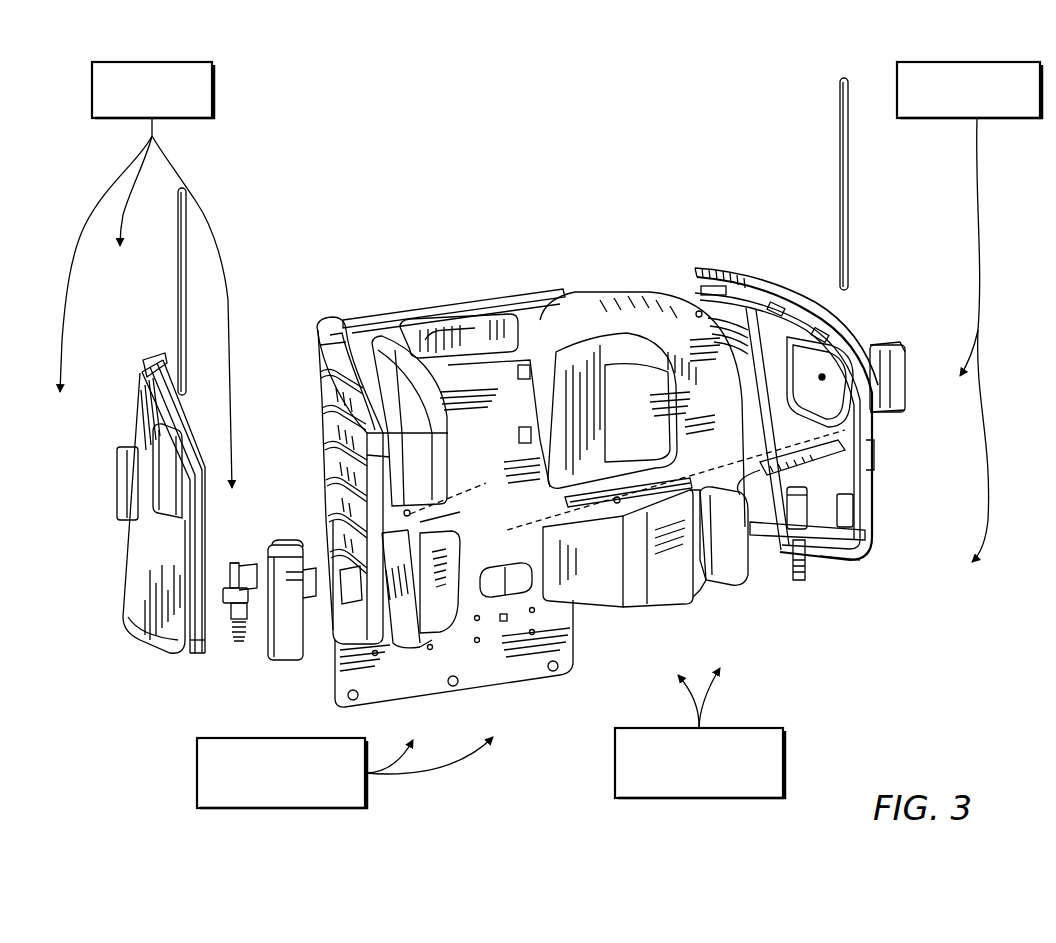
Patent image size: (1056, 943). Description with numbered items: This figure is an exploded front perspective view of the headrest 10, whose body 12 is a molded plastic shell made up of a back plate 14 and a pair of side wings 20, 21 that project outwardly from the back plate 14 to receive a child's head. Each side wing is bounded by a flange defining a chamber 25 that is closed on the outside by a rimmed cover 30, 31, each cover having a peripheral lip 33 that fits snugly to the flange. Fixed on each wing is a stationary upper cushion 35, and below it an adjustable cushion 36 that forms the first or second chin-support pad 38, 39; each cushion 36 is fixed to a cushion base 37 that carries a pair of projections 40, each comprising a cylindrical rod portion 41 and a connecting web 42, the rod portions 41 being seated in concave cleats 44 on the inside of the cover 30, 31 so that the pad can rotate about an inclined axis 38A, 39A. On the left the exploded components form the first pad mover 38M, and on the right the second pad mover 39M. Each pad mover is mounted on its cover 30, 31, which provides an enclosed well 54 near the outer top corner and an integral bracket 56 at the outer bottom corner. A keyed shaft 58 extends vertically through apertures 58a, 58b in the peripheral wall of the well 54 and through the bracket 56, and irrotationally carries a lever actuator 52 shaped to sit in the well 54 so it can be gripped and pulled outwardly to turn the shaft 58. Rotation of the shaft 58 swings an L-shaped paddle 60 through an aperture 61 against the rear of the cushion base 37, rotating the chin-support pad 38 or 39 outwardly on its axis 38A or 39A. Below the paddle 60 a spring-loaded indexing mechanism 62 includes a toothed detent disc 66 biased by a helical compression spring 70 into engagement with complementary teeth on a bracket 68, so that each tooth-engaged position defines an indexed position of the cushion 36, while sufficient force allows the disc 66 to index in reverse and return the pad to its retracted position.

The headrest 10 is at (514, 216).
The body 12 is at (366, 310).
The back plate 14 is at (516, 698).
The first side wing 20 is at (314, 328).
The second side wing 21 is at (722, 270).
The chamber 25 is at (308, 432).
The first cover 30 is at (118, 560).
The second cover 31 is at (878, 448).
The peripheral lip 33 is at (143, 367).
The cushion 35 is at (460, 404).
The cushion 36 is at (458, 596).
The cushion base 37 is at (400, 657).
The first chin-support pad 38 is at (197, 775).
The inclined axis 38A is at (483, 488).
The first pad mover 38M is at (212, 93).
The second chin-support pad 39 is at (787, 762).
The inclined axis 39A is at (767, 535).
The second pad mover 39M is at (897, 80).
The projection 40 is at (580, 500).
The cylindrical rod portion 41 is at (433, 516).
The connecting web 42 is at (330, 478).
The cleat 44 is at (765, 468).
The lever actuator 52 is at (110, 445).
The well 54 is at (173, 495).
The bracket 56 is at (195, 655).
The shaft 58 is at (174, 274).
The aperture 58a is at (882, 352).
The aperture 58b is at (878, 414).
The paddle 60 is at (231, 561).
The aperture 61 is at (318, 525).
The indexing mechanism 62 is at (258, 606).
The detent disc 66 is at (222, 620).
The bracket 68 is at (224, 597).
The spring 70 is at (236, 660).